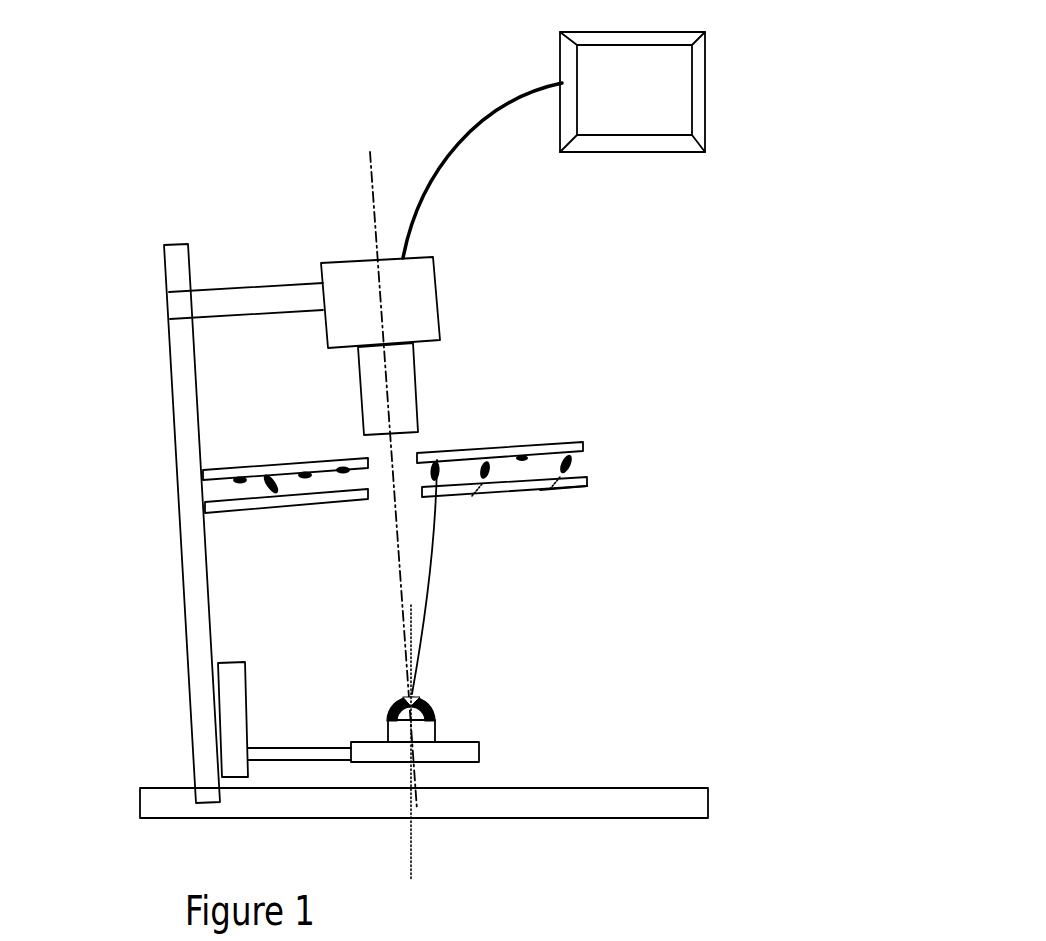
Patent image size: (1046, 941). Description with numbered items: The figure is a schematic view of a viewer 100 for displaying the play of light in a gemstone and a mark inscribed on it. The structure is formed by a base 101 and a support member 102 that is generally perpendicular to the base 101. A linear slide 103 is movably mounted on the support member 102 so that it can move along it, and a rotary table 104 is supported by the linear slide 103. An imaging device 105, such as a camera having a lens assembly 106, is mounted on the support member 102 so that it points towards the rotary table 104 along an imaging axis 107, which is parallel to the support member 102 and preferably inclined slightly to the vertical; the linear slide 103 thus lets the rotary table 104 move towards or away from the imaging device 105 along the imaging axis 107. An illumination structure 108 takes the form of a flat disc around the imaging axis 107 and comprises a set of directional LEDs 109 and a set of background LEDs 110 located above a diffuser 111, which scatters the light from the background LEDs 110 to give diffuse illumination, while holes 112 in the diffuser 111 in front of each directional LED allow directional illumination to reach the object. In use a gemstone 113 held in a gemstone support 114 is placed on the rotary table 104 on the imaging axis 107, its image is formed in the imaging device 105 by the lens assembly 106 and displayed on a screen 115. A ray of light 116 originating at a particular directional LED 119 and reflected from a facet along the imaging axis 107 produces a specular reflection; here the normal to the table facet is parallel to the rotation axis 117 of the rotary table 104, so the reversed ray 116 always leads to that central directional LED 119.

The viewer 100 is at (187, 193).
The base 101 is at (693, 788).
The support member 102 is at (183, 573).
The linear slide 103 is at (233, 663).
The rotary table 104 is at (480, 749).
The imaging device 105 is at (440, 293).
The lens assembly 106 is at (415, 402).
The imaging axis 107 is at (398, 528).
The illumination structure 108 is at (207, 470).
The directional LEDs 109 is at (488, 460).
The background LEDs 110 is at (340, 468).
The diffuser 111 is at (573, 487).
The holes 112 is at (477, 490).
The gemstone 113 is at (418, 693).
The gemstone support 114 is at (437, 722).
The screen 115 is at (647, 153).
The ray of light 116 is at (430, 558).
The rotation axis 117 is at (411, 850).
The central directional LED 119 is at (437, 460).